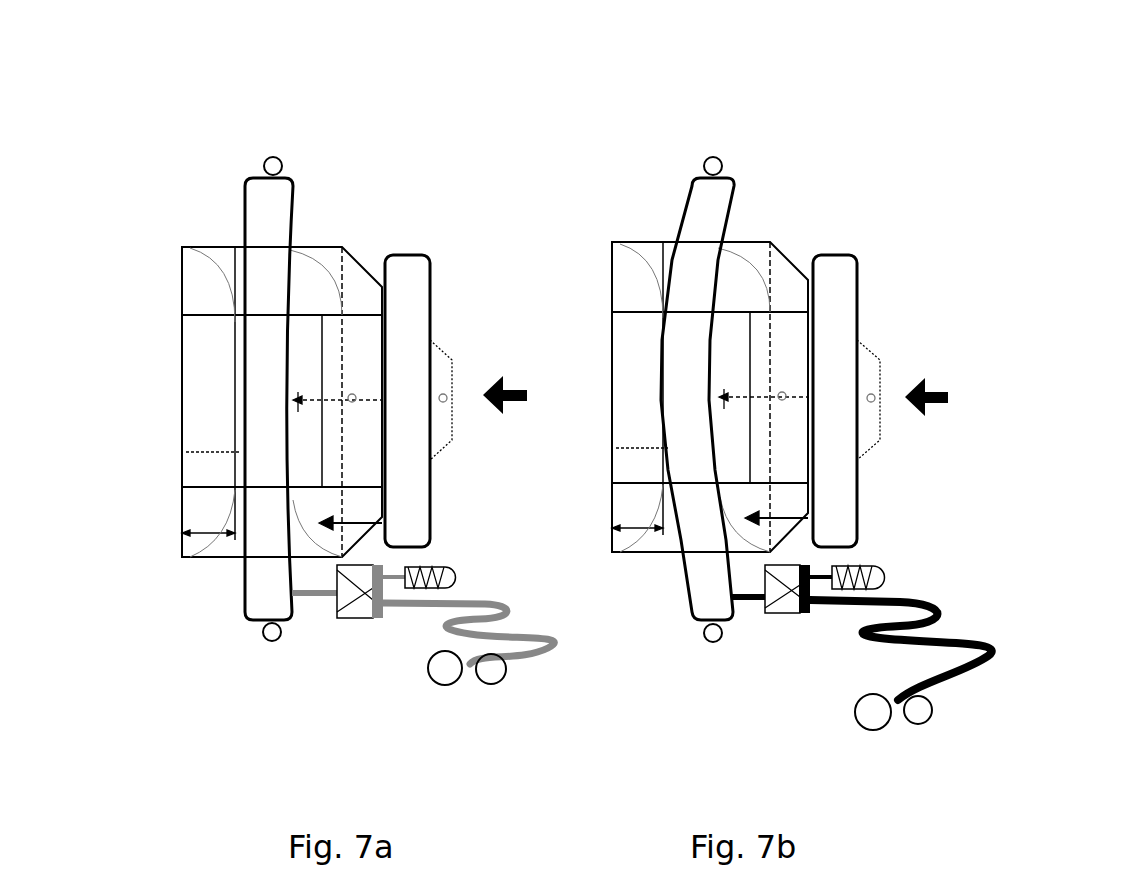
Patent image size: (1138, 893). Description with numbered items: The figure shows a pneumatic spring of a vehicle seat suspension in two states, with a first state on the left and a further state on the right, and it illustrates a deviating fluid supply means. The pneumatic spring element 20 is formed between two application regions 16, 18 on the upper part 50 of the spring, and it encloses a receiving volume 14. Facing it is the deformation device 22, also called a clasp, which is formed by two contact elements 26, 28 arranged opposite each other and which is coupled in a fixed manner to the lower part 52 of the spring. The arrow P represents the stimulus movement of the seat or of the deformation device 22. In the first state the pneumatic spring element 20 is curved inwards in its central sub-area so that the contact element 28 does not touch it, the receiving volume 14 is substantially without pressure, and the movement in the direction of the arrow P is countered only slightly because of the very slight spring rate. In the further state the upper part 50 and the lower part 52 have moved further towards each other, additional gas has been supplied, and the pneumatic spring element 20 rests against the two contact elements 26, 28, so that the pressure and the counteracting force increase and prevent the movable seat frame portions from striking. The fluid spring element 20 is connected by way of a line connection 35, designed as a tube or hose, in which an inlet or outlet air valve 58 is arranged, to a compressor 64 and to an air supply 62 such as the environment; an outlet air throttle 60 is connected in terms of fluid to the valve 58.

In FIG. 7A, the receiving volume 14 is at (267, 208).
In FIG. 7A, the application region 16 is at (268, 158).
In FIG. 7B, the application region 16 is at (705, 158).
In FIG. 7A, the application region 18 is at (265, 642).
In FIG. 7B, the application region 18 is at (707, 642).
In FIG. 7B, the pneumatic spring element 20 is at (705, 213).
In FIG. 7A, the deformation device 22 is at (320, 222).
In FIG. 7B, the deformation device 22 is at (752, 203).
In FIG. 7A, the contact element 26 is at (208, 403).
In FIG. 7B, the contact element 26 is at (620, 388).
In FIG. 7A, the contact element 28 is at (325, 272).
In FIG. 7B, the contact element 28 is at (745, 270).
In FIG. 7A, the line connection 35 is at (498, 612).
In FIG. 7B, the line connection 35 is at (983, 650).
In FIG. 7A, the upper part of the spring 50 is at (221, 435).
In FIG. 7A, the lower part of the spring 52 is at (412, 292).
In FIG. 7B, the lower part of the spring 52 is at (843, 298).
In FIG. 7A, the air inlet and outlet valve 58 is at (365, 620).
In FIG. 7B, the air inlet and outlet valve 58 is at (780, 615).
In FIG. 7A, the throttle 60 is at (440, 578).
In FIG. 7B, the throttle 60 is at (880, 572).
In FIG. 7A, the air supply 62 is at (450, 672).
In FIG. 7B, the air supply 62 is at (870, 715).
In FIG. 7A, the compressor 64 is at (495, 672).
In FIG. 7B, the compressor 64 is at (932, 708).
In FIG. 7A, the arrow P is at (506, 370).
In FIG. 7B, the arrow P is at (935, 375).